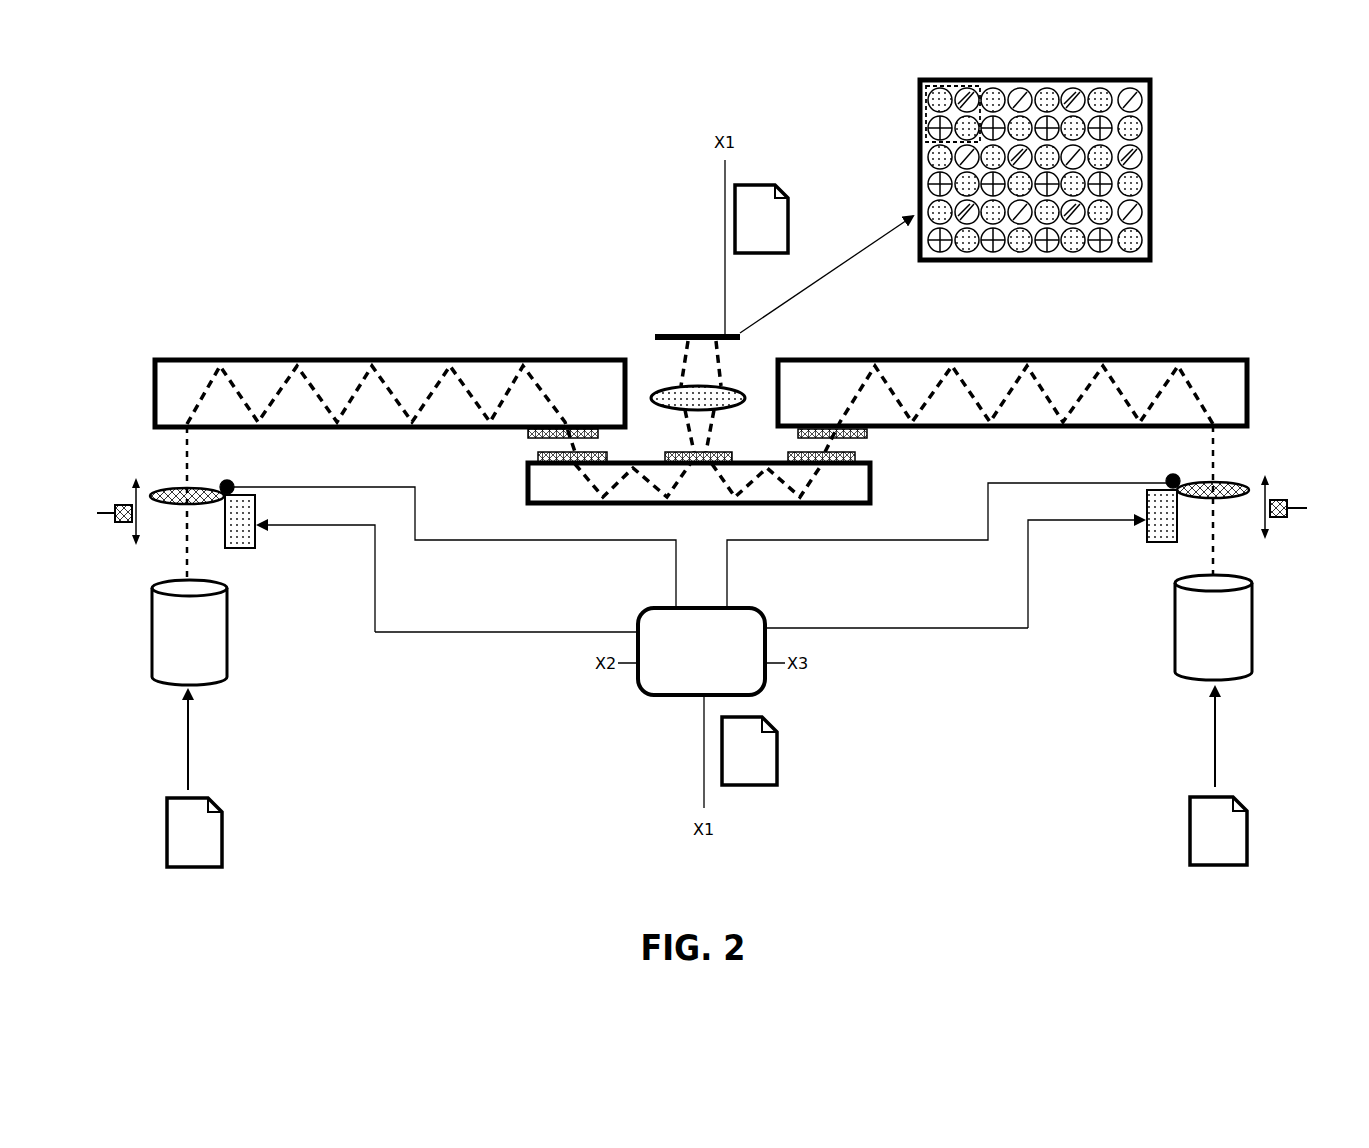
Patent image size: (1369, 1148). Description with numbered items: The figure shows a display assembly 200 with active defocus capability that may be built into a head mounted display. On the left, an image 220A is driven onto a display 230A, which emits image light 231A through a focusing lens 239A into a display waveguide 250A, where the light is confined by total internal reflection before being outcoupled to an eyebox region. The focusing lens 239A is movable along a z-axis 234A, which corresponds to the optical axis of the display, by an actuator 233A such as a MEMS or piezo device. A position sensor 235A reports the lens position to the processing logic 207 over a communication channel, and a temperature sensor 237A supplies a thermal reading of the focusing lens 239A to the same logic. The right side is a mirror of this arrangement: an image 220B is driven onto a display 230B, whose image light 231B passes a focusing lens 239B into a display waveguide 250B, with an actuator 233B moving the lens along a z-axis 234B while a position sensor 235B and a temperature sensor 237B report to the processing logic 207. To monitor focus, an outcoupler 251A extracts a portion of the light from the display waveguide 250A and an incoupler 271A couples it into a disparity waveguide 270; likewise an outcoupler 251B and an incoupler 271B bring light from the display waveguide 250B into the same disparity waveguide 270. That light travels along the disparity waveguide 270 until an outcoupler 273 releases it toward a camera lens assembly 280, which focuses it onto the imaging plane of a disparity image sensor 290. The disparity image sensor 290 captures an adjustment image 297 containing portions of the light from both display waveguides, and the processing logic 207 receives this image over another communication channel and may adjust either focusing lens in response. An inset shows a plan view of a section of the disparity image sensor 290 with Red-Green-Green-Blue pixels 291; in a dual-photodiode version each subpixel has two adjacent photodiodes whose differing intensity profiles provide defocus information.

The display assembly 200 is at (206, 84).
The processing logic 207 is at (687, 669).
The image 220A is at (224, 843).
The image 220B is at (1249, 840).
The display 230A is at (227, 660).
The display 230B is at (1175, 650).
The image light 231A is at (186, 543).
The image light 231B is at (1216, 540).
The actuator 233A is at (255, 550).
The actuator 233B is at (1147, 544).
The z-axis 234A is at (128, 483).
The z-axis 234B is at (1270, 478).
The position sensor 235A is at (118, 524).
The position sensor 235B is at (1280, 519).
The temperature sensor 237A is at (232, 480).
The temperature sensor 237B is at (1170, 475).
The focusing lens 239A is at (160, 491).
The focusing lens 239B is at (1238, 484).
The display waveguide 250A is at (427, 360).
The display waveguide 250B is at (968, 360).
The outcoupler 251A is at (525, 434).
The outcoupler 251B is at (870, 434).
The disparity waveguide 270 is at (870, 500).
The incoupler 271A is at (535, 456).
The incoupler 271B is at (860, 458).
The outcoupler 273 is at (732, 455).
The camera lens assembly 280 is at (735, 388).
The disparity image sensor 290 is at (675, 334).
The RGGB pixels 291 is at (975, 86).
The adjustment image 297 is at (790, 228).